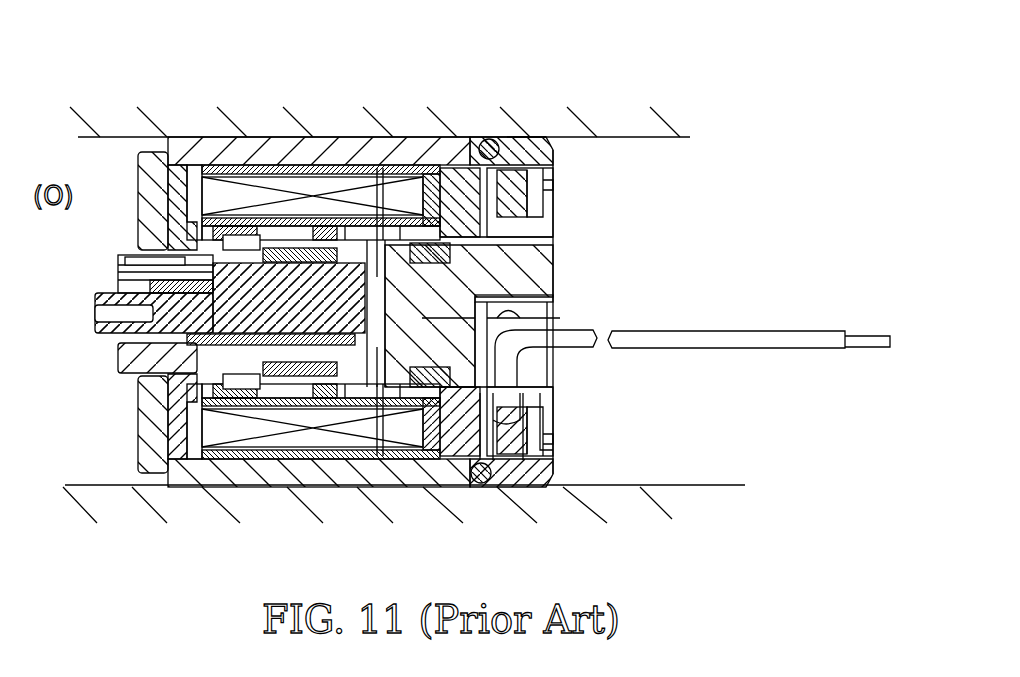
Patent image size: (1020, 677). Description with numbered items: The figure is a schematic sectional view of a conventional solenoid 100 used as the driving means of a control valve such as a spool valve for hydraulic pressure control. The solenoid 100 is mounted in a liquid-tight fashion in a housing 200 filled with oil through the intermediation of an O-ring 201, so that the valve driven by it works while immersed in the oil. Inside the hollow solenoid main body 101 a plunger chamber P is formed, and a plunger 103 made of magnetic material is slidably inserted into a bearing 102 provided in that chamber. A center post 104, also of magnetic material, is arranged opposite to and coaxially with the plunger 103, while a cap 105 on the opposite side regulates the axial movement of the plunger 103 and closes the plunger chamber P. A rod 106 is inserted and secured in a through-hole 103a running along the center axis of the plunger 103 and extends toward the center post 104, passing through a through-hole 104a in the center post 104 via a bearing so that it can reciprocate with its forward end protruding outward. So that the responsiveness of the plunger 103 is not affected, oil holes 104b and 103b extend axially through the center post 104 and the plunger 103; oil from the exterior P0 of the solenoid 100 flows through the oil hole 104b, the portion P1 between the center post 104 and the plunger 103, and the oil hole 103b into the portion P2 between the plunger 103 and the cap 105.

The solenoid 100 is at (640, 222).
The solenoid main body 101 is at (253, 138).
The bearing 102 is at (322, 257).
The plunger 103 is at (205, 250).
The through-hole 103a is at (258, 392).
The oil hole 103b is at (340, 398).
The center post 104 is at (130, 374).
The through-hole 104a is at (123, 343).
The oil hole 104b is at (118, 262).
The cap 105 is at (555, 243).
The rod 106 is at (398, 398).
The housing 200 is at (700, 473).
The O-ring 201 is at (490, 138).
The plunger chamber P is at (372, 300).
The exterior P0 is at (118, 273).
The portion between the center post and the plunger P1 is at (118, 293).
The portion between the plunger and the cap P2 is at (553, 271).